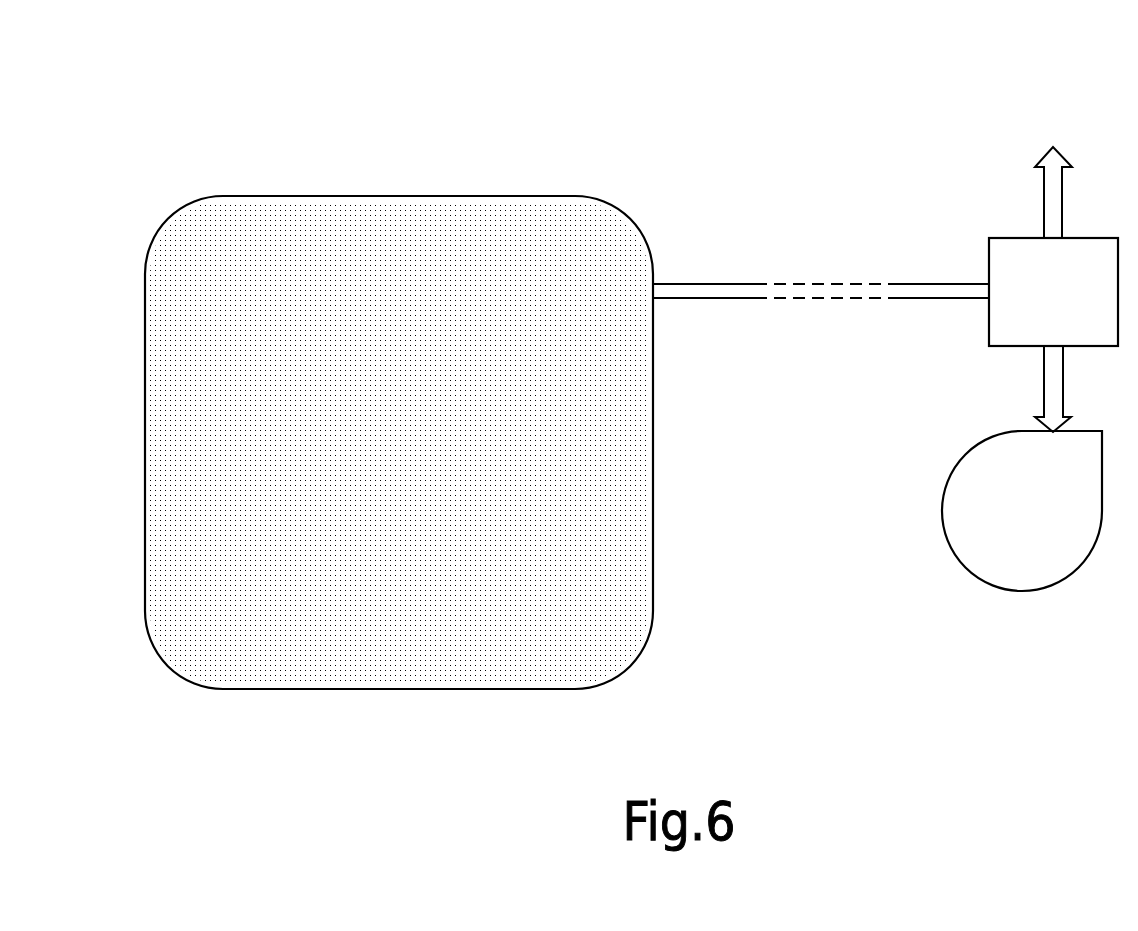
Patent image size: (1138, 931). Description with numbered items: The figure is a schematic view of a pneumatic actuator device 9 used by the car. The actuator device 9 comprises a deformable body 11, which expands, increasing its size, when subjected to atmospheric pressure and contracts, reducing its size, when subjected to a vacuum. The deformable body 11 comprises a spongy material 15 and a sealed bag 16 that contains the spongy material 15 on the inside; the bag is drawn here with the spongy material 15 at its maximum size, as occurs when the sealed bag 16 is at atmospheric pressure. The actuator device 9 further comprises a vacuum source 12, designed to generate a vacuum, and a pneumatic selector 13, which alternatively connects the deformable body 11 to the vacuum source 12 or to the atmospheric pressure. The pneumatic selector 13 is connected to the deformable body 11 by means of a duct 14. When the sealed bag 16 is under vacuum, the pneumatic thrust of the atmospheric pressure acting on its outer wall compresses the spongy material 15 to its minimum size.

The actuator device 9 is at (195, 85).
The deformable body 11 is at (704, 515).
The vacuum source 12 is at (1022, 511).
The pneumatic selector 13 is at (1053, 289).
The duct 14 is at (942, 289).
The spongy material 15 is at (368, 610).
The sealed bag 16 is at (516, 196).